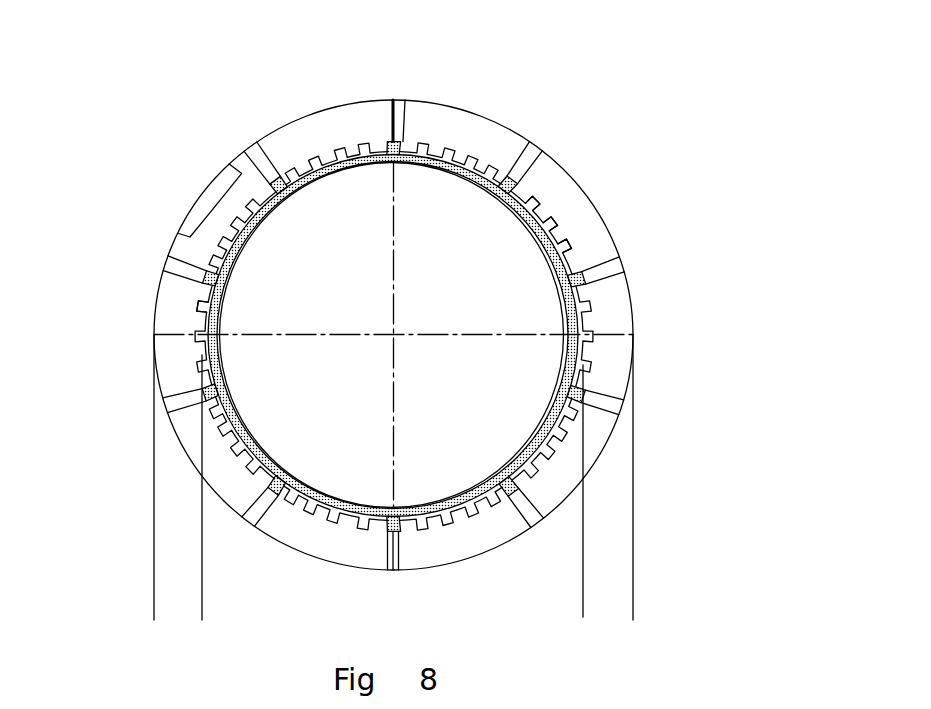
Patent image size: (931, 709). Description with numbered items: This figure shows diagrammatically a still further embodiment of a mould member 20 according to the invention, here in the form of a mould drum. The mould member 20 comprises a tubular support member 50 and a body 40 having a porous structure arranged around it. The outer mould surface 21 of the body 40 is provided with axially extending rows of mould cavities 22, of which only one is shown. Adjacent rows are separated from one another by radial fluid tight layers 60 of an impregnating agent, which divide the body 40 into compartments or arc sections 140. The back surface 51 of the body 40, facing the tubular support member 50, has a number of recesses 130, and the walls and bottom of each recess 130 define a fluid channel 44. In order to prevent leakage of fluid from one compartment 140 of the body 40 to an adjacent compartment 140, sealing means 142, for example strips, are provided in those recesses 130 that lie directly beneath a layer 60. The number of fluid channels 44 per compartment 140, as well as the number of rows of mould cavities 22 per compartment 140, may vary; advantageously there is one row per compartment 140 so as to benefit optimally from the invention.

The mould member 20 is at (421, 265).
The outer mould surface 21 is at (290, 122).
The mould cavity 22 is at (197, 201).
The body 40 is at (452, 122).
The fluid channel 44 is at (340, 156).
The tubular support member 50 is at (221, 310).
The back surface 51 is at (200, 311).
The radial fluid tight layer 60 is at (521, 168).
The recess 130 is at (580, 255).
The compartment 140 is at (540, 543).
The sealing means 142 is at (519, 183).